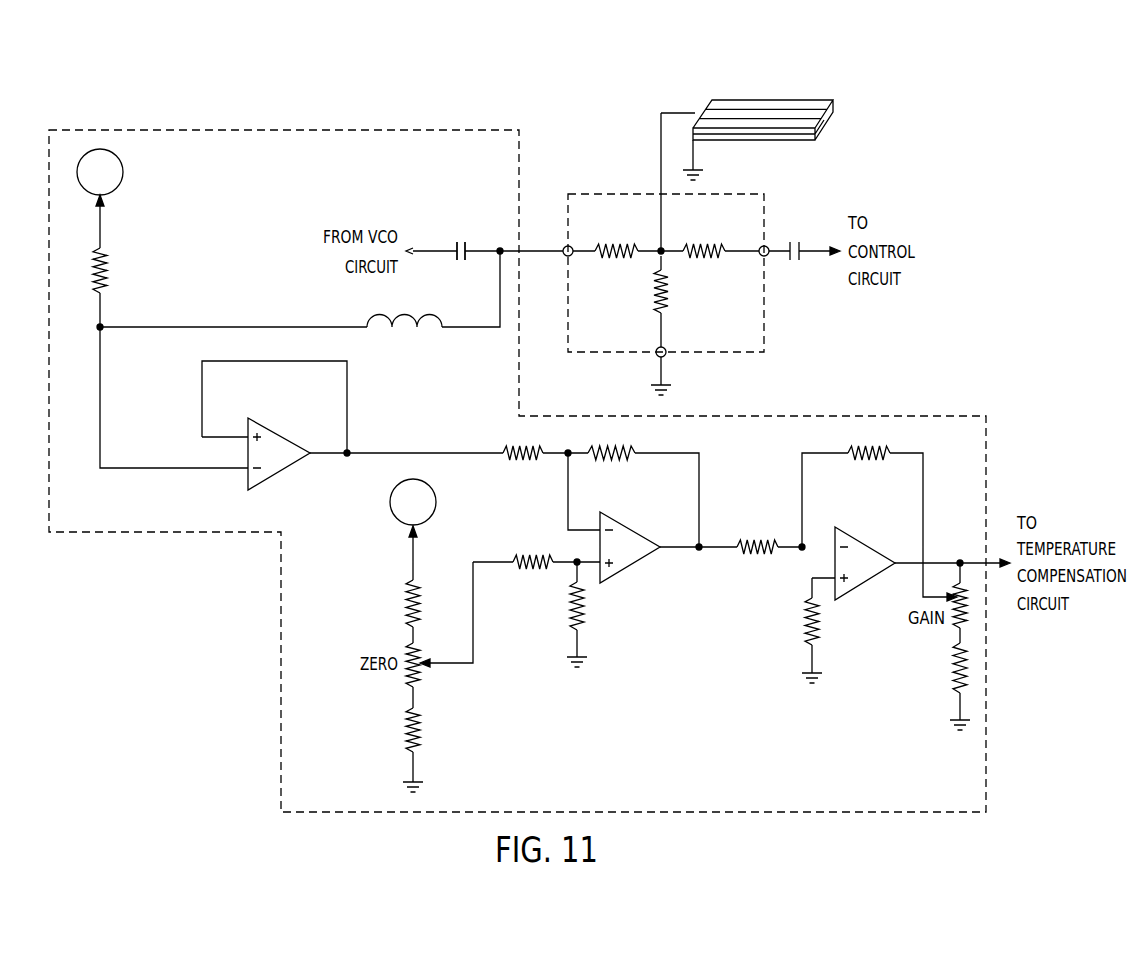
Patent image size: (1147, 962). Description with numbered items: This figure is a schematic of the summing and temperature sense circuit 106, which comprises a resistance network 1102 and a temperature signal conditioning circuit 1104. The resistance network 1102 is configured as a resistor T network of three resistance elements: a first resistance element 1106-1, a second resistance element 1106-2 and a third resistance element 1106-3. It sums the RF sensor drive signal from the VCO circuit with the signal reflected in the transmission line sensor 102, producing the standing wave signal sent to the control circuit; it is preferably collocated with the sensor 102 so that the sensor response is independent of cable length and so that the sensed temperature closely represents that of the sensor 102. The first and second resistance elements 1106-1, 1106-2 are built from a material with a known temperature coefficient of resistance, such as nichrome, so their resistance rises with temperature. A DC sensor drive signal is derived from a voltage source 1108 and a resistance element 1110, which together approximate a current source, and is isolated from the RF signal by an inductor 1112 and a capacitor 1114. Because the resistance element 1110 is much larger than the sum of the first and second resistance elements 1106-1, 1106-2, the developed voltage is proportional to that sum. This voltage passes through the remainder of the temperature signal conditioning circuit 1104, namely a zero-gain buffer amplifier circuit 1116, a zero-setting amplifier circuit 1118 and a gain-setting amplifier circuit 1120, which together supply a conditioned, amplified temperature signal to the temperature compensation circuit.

The transmission line sensor 102 is at (795, 100).
The summing and temperature sense circuit 106 is at (700, 72).
The resistance network 1102 is at (764, 326).
The temperature signal conditioning circuit 1104 is at (457, 130).
The first resistance element 1106-1 is at (618, 262).
The second resistance element 1106-2 is at (672, 288).
The third resistance element 1106-3 is at (701, 247).
The voltage source 1108 is at (124, 174).
The resistance element 1110 is at (108, 268).
The inductor 1112 is at (367, 318).
The capacitor 1114 is at (456, 242).
The zero-gain buffer amplifier circuit 1116 is at (370, 401).
The zero-setting amplifier circuit 1118 is at (563, 488).
The gain-setting amplifier circuit 1120 is at (783, 518).